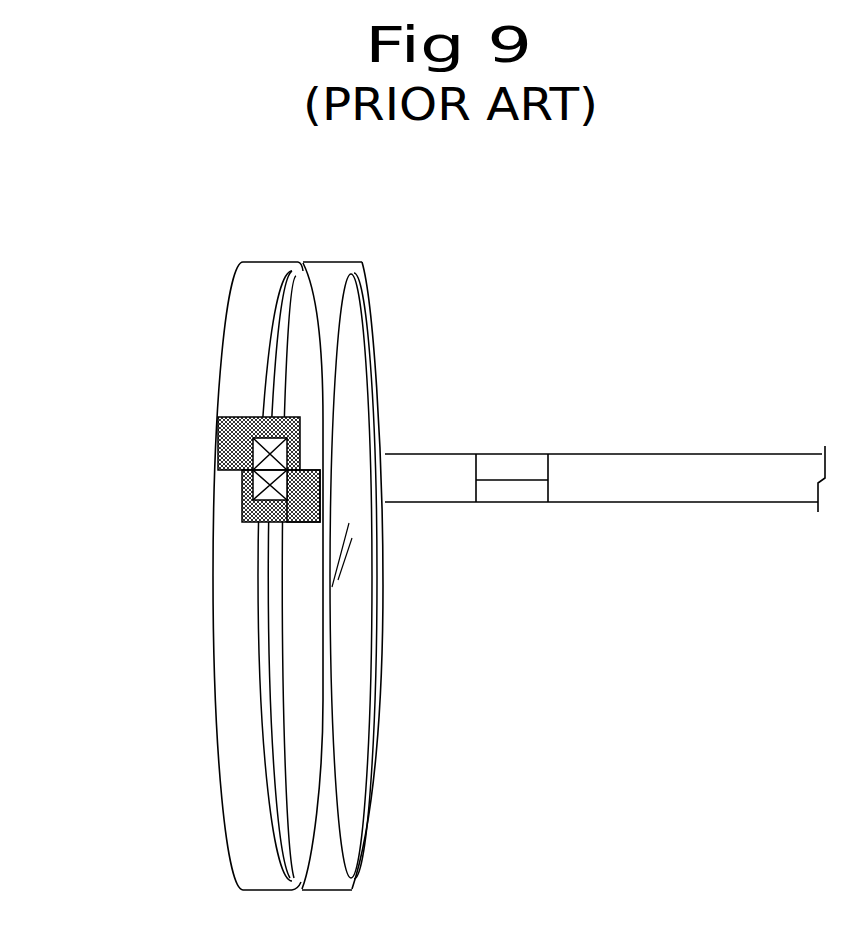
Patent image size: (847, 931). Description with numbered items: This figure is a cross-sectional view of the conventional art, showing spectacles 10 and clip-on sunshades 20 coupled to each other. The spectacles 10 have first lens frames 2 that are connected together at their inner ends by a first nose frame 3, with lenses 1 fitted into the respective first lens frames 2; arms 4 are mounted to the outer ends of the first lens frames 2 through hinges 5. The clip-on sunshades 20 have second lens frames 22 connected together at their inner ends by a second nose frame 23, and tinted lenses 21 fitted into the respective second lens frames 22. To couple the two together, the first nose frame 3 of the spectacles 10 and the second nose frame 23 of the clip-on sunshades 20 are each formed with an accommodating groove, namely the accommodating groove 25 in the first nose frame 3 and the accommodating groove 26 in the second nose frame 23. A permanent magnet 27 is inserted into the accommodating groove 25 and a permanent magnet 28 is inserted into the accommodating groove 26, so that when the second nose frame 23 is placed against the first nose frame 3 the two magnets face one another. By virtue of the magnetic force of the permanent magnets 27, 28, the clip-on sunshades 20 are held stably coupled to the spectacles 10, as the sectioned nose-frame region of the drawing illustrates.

The spectacles 10 is at (550, 330).
The clip-on sunshades 20 is at (186, 648).
The tinted lenses 21 is at (275, 745).
The second lens frames 22 is at (232, 837).
The lenses 1 is at (358, 663).
The first lens frames 2 is at (374, 367).
The first nose frame 3 is at (322, 499).
The arms 4 is at (698, 493).
The hinges 5 is at (530, 497).
The second nose frame 23 is at (218, 442).
The accommodating groove 25 is at (243, 521).
The accommodating groove 26 is at (262, 438).
The permanent magnet 27 is at (262, 485).
The permanent magnet 28 is at (258, 457).